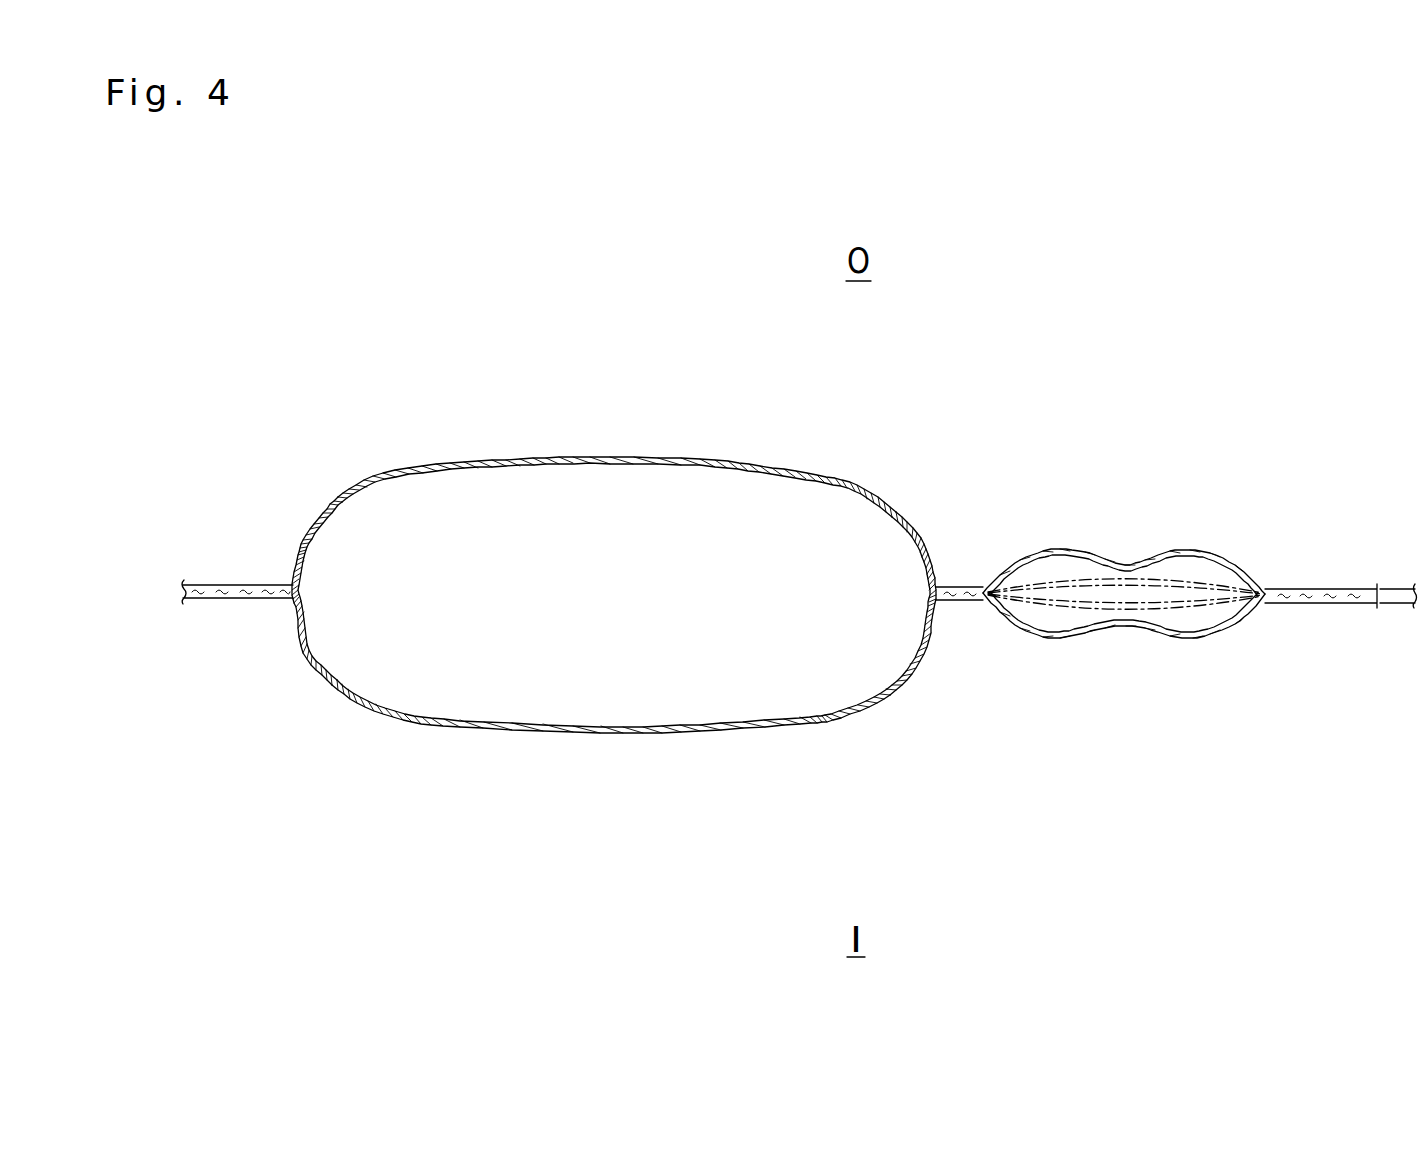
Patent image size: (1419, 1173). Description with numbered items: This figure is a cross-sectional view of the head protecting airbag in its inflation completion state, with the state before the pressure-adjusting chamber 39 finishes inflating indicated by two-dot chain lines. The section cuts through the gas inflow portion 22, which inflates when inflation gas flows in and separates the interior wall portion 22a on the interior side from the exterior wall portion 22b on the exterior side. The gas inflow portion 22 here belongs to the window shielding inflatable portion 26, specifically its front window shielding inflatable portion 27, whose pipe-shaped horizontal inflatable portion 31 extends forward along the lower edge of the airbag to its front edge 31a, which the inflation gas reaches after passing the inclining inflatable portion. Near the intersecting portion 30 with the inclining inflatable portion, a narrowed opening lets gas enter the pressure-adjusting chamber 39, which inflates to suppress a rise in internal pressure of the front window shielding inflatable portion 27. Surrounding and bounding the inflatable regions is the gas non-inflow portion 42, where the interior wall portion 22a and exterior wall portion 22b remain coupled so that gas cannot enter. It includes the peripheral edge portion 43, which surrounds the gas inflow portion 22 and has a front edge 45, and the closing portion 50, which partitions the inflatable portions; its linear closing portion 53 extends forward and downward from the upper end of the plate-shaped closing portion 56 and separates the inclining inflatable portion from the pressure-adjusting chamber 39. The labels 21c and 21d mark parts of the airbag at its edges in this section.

The bag body 21c is at (363, 375).
The gas inflow portion 22 is at (378, 680).
The interior wall portion 22a is at (445, 727).
The exterior wall portion 22b is at (482, 458).
The front edge of the horizontal inflatable portion 31a is at (310, 587).
The horizontal inflatable portion 31 is at (547, 594).
The front window shielding inflatable portion 27 is at (547, 594).
The window shielding inflatable portion 26 is at (508, 627).
The intersecting portion 30 is at (808, 613).
The front edge of the peripheral edge portion 45 is at (207, 670).
The gas non-inflow portion 42 is at (760, 583).
The peripheral edge portion 43 is at (207, 670).
The connecting portion 21d is at (238, 598).
The linear closing portion 53 is at (960, 588).
The closing portion 50 is at (1146, 583).
The plate-shaped closing portion 56 is at (1320, 603).
The pressure-adjusting chamber 39 is at (1132, 593).